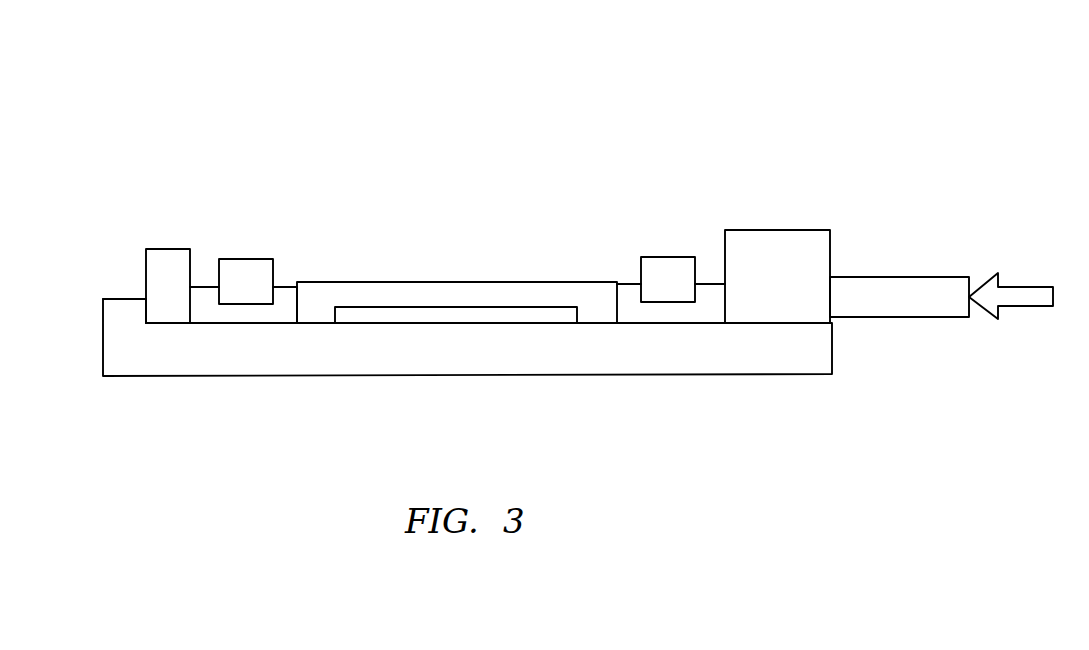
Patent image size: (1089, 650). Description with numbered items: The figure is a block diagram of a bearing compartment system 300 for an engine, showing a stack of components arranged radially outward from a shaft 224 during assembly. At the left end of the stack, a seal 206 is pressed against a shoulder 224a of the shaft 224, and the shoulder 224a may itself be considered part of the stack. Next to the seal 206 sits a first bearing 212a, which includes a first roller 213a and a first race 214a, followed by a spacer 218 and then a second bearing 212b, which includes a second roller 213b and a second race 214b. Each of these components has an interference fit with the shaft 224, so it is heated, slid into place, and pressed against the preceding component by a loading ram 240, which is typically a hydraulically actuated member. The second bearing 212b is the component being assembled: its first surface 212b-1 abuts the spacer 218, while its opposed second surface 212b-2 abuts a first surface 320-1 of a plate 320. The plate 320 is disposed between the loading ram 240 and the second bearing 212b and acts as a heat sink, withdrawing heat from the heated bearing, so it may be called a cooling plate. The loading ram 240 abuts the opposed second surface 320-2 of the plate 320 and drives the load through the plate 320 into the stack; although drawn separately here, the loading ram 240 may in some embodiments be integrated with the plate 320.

The system 300 is at (815, 103).
The seal 206 is at (163, 263).
The first bearing 212a is at (249, 240).
The second bearing 212b is at (630, 236).
The first surface 212b-1 is at (613, 304).
The second surface 212b-2 is at (727, 308).
The first roller 213a is at (237, 292).
The second roller 213b is at (658, 290).
The first race 214a is at (274, 313).
The second race 214b is at (697, 310).
The spacer 218 is at (383, 293).
The shaft 224 is at (478, 352).
The shoulder 224a is at (128, 304).
The plate 320 is at (772, 238).
The first surface 320-1 is at (725, 258).
The second surface 320-2 is at (830, 240).
The loading ram 240 is at (891, 290).